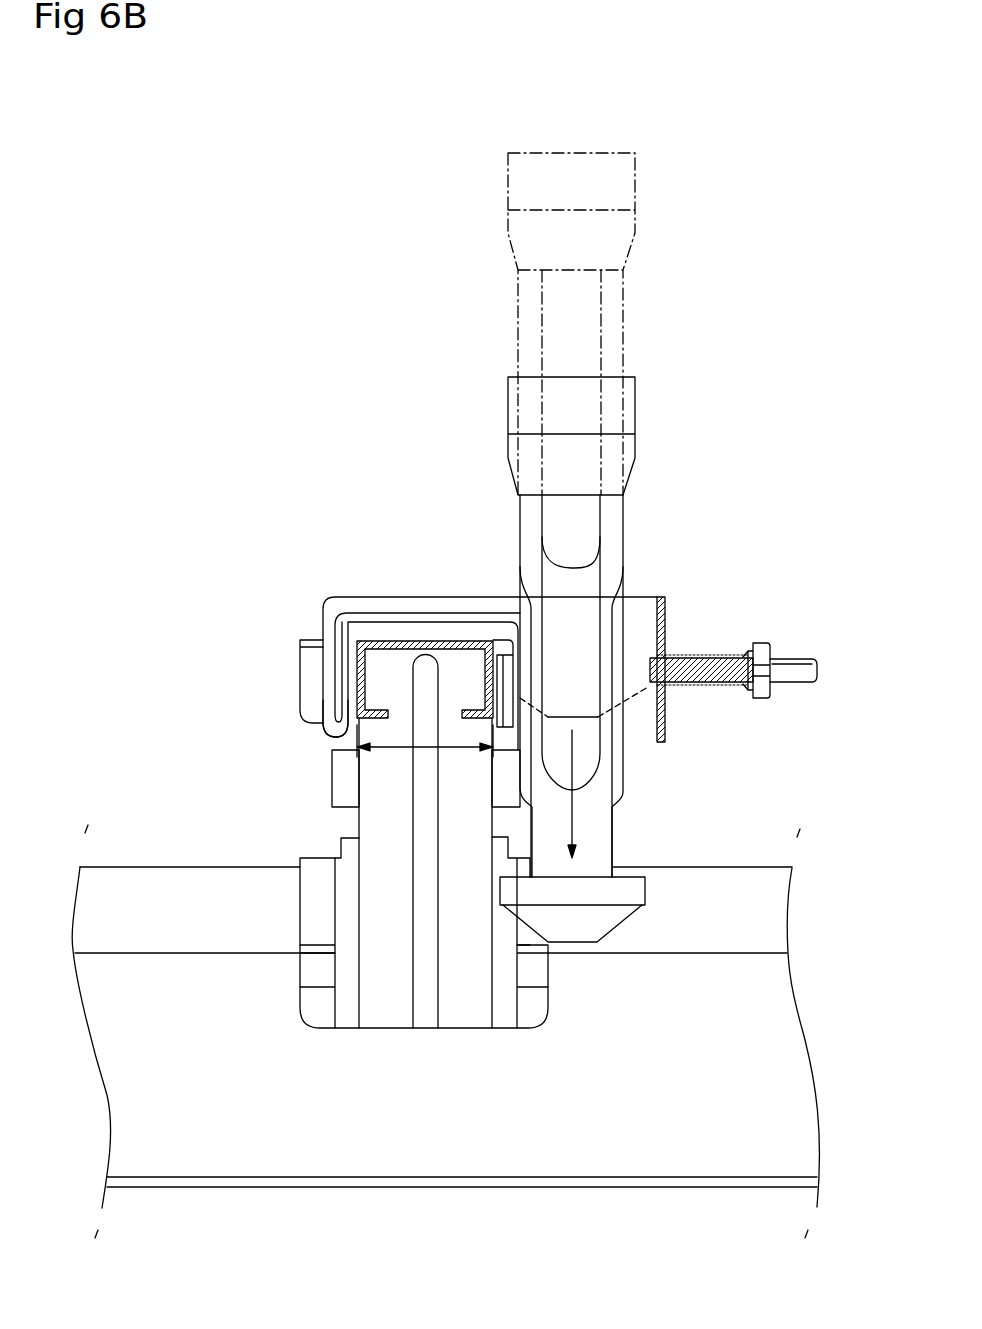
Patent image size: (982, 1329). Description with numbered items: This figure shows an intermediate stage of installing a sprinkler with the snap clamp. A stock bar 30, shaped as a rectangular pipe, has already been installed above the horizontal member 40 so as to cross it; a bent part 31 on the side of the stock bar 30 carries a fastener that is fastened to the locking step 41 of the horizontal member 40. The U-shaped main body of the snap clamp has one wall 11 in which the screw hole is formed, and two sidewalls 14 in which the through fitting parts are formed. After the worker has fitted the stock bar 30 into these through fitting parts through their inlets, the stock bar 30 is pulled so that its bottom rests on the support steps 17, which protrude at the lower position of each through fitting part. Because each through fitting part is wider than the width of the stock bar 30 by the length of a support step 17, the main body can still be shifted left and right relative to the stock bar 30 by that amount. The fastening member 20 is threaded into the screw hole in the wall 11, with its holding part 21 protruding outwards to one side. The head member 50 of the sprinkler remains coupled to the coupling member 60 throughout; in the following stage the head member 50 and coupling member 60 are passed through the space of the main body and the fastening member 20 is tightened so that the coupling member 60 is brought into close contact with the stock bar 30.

The wall 11 is at (667, 702).
The sidewall 14 is at (633, 717).
The support step 17 is at (362, 730).
The fastening member 20 is at (772, 624).
The holding part 21 is at (812, 657).
The stock bar 30 is at (392, 638).
The bent part 31 is at (390, 795).
The horizontal member 40 is at (678, 1080).
The locking step 41 is at (222, 953).
The head member 50 is at (625, 897).
The coupling member 60 is at (625, 578).